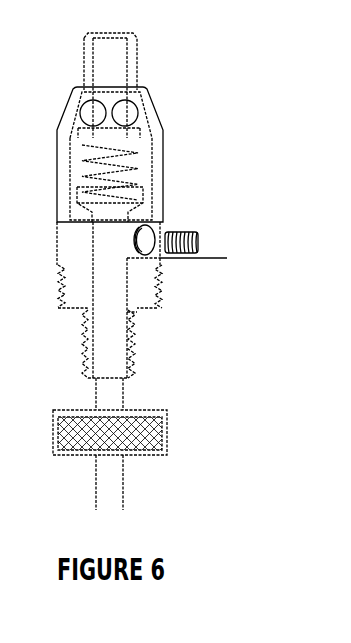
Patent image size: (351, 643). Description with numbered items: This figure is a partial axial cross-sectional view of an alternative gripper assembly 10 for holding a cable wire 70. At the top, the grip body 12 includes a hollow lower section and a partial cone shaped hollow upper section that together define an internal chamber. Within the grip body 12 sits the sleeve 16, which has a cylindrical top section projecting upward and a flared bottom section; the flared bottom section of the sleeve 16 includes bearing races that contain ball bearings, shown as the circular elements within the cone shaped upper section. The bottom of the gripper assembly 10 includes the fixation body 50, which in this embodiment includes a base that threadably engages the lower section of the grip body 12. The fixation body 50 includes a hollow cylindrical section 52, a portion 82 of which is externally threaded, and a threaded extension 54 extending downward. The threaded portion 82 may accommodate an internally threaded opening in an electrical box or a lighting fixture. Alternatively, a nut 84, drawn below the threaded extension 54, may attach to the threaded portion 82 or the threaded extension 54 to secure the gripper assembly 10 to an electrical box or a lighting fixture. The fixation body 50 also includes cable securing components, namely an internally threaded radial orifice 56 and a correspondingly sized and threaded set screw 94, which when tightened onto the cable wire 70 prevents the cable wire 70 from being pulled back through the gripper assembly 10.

The gripper assembly 10 is at (173, 168).
The grip body 12 is at (166, 147).
The sleeve 16 is at (148, 55).
The fixation body 50 is at (189, 256).
The hollow cylindrical section 52 is at (154, 300).
The threaded extension 54 is at (145, 354).
The internally threaded radial orifice 56 is at (165, 230).
The cable wire 70 is at (124, 500).
The threaded portion 82 is at (177, 279).
The nut 84 is at (174, 429).
The set screw 94 is at (198, 243).